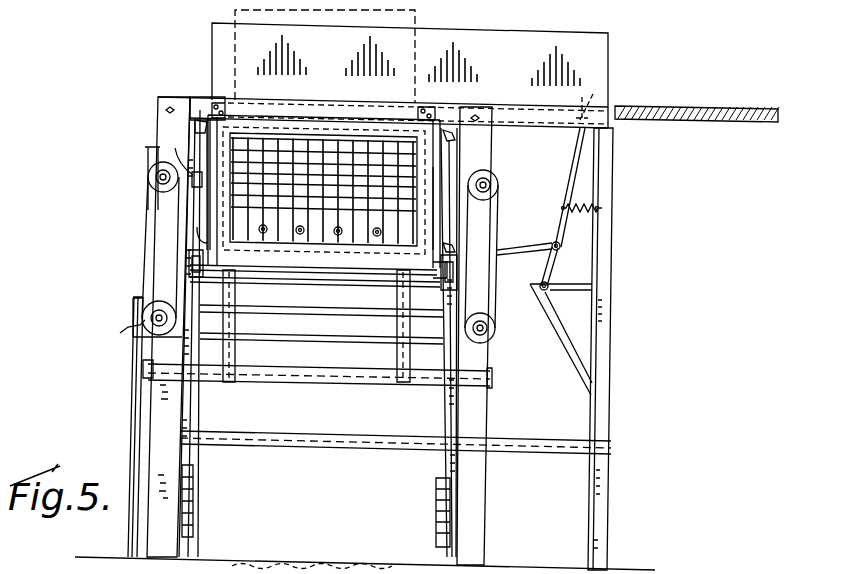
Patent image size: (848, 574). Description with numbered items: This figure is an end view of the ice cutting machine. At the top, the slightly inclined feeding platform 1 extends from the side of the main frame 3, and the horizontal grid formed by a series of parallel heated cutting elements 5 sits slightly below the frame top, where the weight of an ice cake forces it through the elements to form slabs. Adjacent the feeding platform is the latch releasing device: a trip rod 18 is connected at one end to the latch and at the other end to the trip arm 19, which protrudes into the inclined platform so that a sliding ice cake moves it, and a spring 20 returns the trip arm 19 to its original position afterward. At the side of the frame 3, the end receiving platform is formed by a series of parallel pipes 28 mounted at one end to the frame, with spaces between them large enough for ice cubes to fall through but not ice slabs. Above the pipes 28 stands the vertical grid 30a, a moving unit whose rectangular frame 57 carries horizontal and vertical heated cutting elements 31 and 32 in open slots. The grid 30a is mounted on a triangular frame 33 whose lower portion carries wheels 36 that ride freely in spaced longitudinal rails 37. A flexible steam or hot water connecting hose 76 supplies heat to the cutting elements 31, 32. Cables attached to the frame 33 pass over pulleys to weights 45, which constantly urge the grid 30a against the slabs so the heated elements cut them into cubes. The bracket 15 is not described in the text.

The feeding platform 1 is at (651, 107).
The main frame 3 is at (167, 97).
The heated cutting elements 5 is at (250, 108).
The clamp bracket 15 is at (205, 97).
The trip rod 18 is at (523, 249).
The trip arm 19 is at (607, 86).
The spring 20 is at (577, 199).
The parallel pipes 28 is at (340, 234).
The vertical grid 30a is at (381, 137).
The horizontal heated cutting elements 31 is at (278, 173).
The vertical heated cutting elements 32 is at (340, 157).
The triangular frame 33 is at (207, 226).
The rear wheels 36 is at (193, 272).
The longitudinal rails 37 is at (190, 258).
The weights 45 is at (200, 510).
The rectangular frame 57 is at (307, 127).
The flexible steam or hot water connecting hose 76 is at (180, 153).